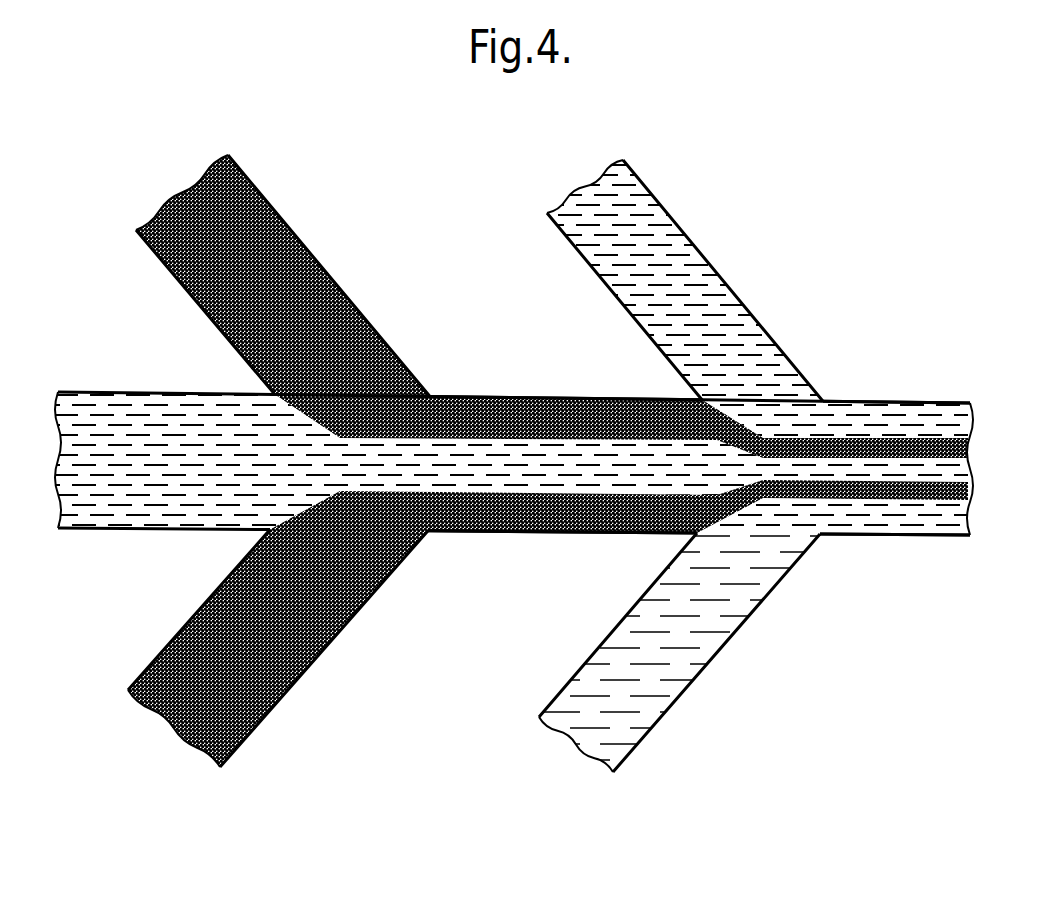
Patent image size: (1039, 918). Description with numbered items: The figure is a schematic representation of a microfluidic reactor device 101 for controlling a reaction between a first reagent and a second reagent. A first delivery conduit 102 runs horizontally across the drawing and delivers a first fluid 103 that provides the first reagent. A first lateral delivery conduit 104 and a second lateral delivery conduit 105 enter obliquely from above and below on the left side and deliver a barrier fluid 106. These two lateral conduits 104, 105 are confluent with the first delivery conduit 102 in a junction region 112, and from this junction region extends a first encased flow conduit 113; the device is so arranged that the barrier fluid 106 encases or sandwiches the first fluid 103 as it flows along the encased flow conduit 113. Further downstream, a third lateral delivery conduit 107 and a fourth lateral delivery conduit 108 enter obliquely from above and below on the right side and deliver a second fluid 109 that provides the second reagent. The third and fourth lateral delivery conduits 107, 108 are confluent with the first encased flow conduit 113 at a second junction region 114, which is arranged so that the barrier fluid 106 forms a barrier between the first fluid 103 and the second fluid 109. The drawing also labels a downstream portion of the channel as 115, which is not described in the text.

The microfluidic reactor device 101 is at (416, 196).
The first delivery conduit 102 is at (117, 390).
The first fluid 103 is at (943, 465).
The first lateral delivery conduit 104 is at (163, 262).
The second lateral delivery conduit 105 is at (290, 690).
The barrier fluid 106 is at (305, 265).
The third lateral delivery conduit 107 is at (680, 228).
The fourth lateral delivery conduit 108 is at (678, 698).
The second fluid 109 is at (612, 266).
The junction region 112 is at (438, 390).
The first encased flow conduit 113 is at (505, 535).
The junction region 114 is at (830, 392).
The second focusing region / outlet 115 is at (888, 537).